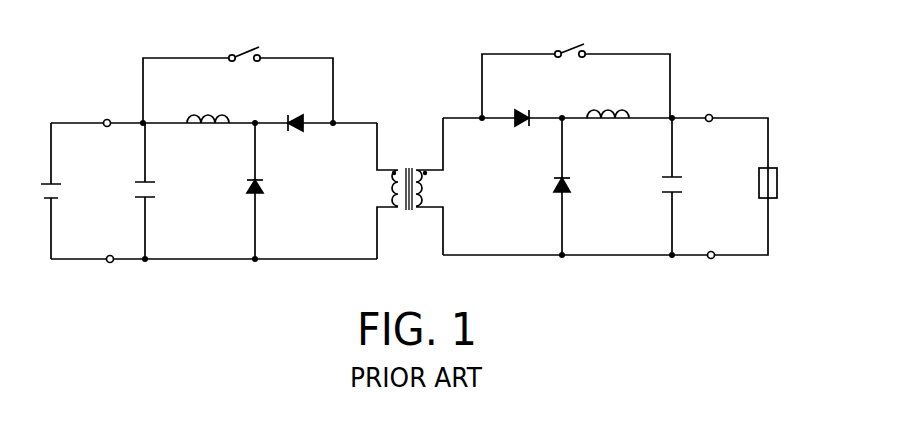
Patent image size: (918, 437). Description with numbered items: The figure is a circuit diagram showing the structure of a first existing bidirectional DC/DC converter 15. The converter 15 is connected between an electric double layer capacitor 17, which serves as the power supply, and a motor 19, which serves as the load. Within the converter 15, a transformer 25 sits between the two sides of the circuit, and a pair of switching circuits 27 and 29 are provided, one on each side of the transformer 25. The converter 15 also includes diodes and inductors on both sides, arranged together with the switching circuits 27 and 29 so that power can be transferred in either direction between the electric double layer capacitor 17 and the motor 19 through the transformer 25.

The bidirectional DC/DC converter 15 is at (395, 68).
The electric double layer capacitor 17 is at (66, 181).
The motor 19 is at (758, 192).
The transformer 25 is at (409, 165).
The switching circuit 27 is at (241, 66).
The switching circuit 29 is at (573, 62).